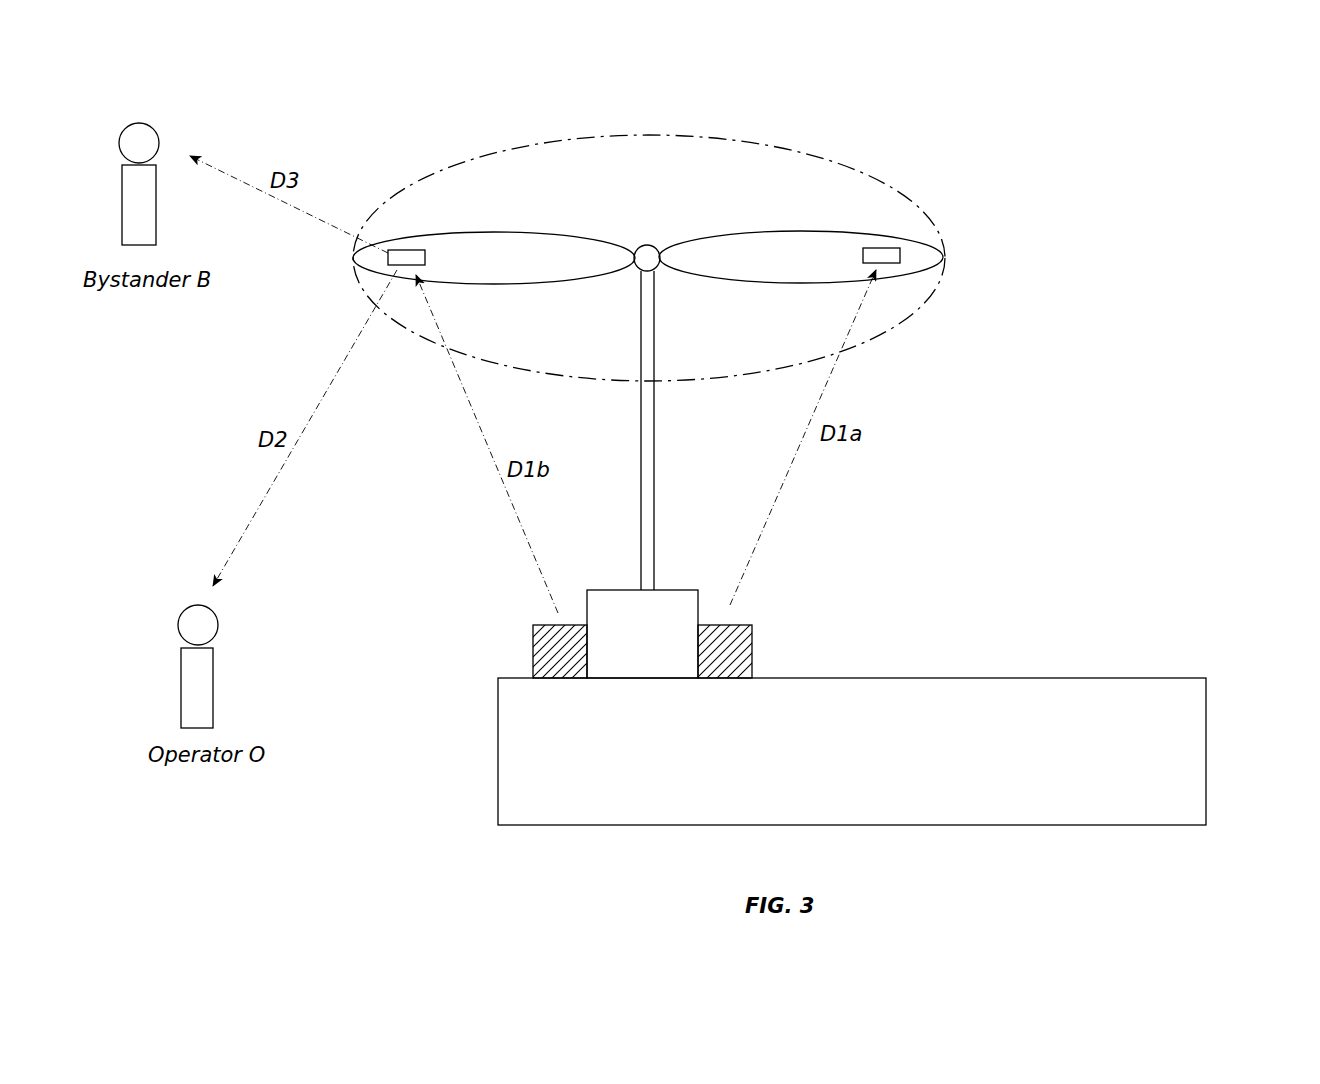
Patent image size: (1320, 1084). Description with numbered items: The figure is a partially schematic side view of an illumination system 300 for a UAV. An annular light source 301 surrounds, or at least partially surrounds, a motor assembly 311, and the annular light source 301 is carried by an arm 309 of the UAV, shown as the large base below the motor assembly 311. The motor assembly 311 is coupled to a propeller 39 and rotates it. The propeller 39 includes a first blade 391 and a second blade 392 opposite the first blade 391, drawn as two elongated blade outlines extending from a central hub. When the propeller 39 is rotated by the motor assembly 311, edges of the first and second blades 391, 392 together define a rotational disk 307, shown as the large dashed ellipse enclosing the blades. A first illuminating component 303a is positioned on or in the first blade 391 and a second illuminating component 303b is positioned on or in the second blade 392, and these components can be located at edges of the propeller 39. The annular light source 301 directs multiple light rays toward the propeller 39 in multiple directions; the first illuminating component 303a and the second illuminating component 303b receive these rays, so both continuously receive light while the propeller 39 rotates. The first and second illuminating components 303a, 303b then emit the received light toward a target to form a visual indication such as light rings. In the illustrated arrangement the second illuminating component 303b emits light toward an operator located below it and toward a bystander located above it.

The illumination system 300 is at (1259, 179).
The rotational disk 307 is at (679, 122).
The propeller 39 is at (712, 185).
The first blade 391 is at (863, 226).
The second blade 392 is at (473, 247).
The first illuminating component 303a is at (901, 256).
The second illuminating component 303b is at (406, 256).
The motor assembly 311 is at (642, 634).
The annular light source 301 is at (739, 651).
The arm 309 is at (1142, 769).